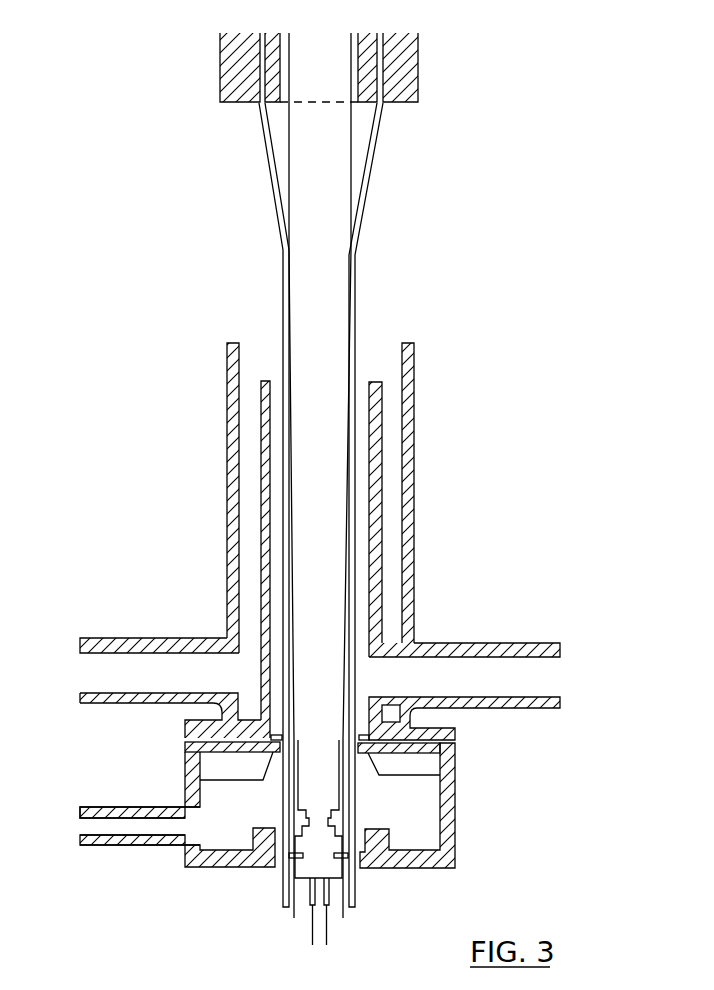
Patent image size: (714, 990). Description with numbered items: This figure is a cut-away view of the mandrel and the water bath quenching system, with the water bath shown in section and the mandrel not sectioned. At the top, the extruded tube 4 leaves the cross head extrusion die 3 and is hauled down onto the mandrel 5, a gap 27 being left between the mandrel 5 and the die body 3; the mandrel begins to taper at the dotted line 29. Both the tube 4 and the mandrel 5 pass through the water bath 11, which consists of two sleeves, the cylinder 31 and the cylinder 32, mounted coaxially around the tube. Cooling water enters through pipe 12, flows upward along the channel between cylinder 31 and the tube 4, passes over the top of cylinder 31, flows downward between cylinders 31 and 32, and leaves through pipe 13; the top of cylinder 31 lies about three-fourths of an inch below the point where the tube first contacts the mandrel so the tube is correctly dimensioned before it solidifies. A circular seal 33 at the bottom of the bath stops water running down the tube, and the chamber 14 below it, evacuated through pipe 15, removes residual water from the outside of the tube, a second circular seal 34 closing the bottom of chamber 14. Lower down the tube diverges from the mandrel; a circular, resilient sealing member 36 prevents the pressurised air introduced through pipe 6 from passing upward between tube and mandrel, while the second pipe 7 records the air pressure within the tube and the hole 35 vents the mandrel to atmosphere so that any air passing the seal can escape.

The cross head extrusion die 3 is at (413, 60).
The tube 4 is at (365, 190).
The mandrel 5 is at (333, 285).
The pipe 6 is at (329, 938).
The second pipe 7 is at (307, 938).
The water bath 11 is at (317, 540).
The pipe 12 is at (560, 651).
The pipe 13 is at (80, 647).
The chamber 14 is at (455, 843).
The pipe 15 is at (93, 827).
The gap 27 is at (283, 103).
The dotted line 29 is at (327, 103).
The cylinder 31 is at (263, 503).
The cylinder 32 is at (233, 568).
The circular seal 33 is at (263, 777).
The second circular seal 34 is at (283, 858).
The hole 35 is at (327, 820).
The sealing member 36 is at (319, 913).